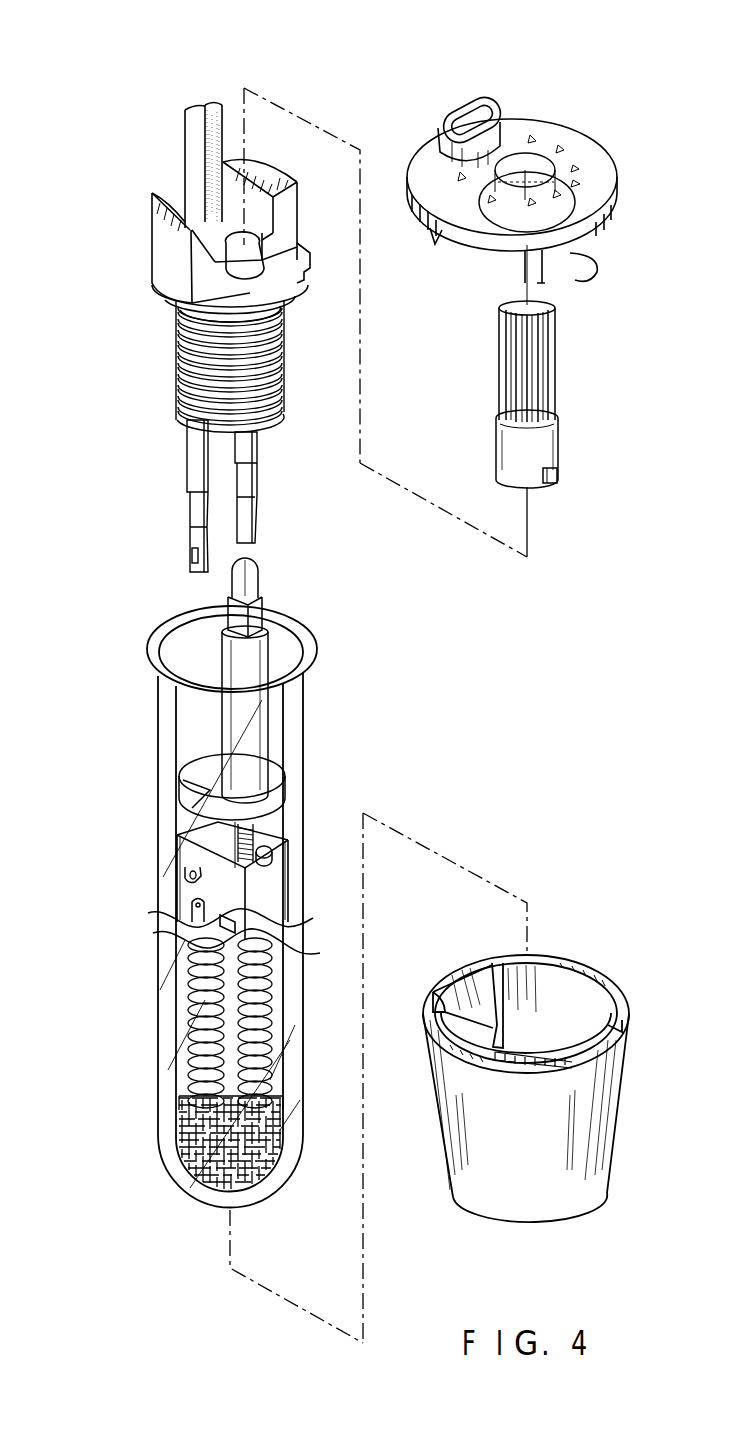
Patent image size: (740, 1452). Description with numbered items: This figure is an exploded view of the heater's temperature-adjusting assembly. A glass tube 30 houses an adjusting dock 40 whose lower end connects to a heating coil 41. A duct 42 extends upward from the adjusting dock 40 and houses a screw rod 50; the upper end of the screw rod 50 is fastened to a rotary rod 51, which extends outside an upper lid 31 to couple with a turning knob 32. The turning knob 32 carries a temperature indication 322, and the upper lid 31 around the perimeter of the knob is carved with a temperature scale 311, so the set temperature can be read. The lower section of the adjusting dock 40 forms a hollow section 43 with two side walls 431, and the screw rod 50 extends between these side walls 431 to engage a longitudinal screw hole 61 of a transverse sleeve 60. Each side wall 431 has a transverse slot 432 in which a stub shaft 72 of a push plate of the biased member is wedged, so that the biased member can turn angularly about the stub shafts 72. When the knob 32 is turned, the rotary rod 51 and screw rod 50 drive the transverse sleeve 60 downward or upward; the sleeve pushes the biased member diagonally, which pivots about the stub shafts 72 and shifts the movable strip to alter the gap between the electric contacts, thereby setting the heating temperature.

The glass tube 30 is at (295, 712).
The upper lid 31 is at (425, 152).
The temperature scale 311 is at (585, 175).
The turning knob 32 is at (511, 450).
The temperature indication 322 is at (552, 417).
The adjusting dock 40 is at (188, 792).
The heating coil 41 is at (203, 1055).
The duct 42 is at (230, 653).
The hollow section 43 is at (265, 897).
The side walls 431 is at (220, 905).
The transverse slot 432 is at (175, 868).
The screw rod 50 is at (175, 818).
The rotary rod 51 is at (255, 610).
The transverse sleeve 60 is at (262, 868).
The longitudinal screw hole 61 is at (275, 835).
The stub shafts 72 is at (193, 877).